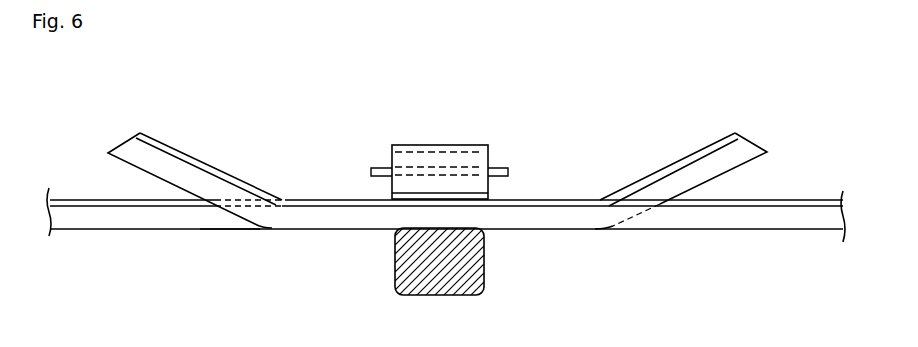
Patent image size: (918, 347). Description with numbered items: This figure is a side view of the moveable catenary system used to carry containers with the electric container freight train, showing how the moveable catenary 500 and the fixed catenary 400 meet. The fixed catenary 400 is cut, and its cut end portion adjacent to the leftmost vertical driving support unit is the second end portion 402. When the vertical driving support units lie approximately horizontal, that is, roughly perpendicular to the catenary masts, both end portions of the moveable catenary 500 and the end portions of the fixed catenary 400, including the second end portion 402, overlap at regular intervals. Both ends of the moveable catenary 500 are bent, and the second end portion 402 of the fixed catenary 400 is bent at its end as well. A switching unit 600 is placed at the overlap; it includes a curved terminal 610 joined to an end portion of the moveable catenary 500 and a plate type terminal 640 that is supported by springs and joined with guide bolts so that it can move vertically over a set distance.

The fixed catenary 400 is at (110, 238).
The second end portion 402 is at (221, 229).
The moveable catenary 500 is at (768, 238).
The switching unit 600 is at (428, 140).
The curved terminal 610 is at (482, 160).
The plate type terminal 640 is at (382, 170).